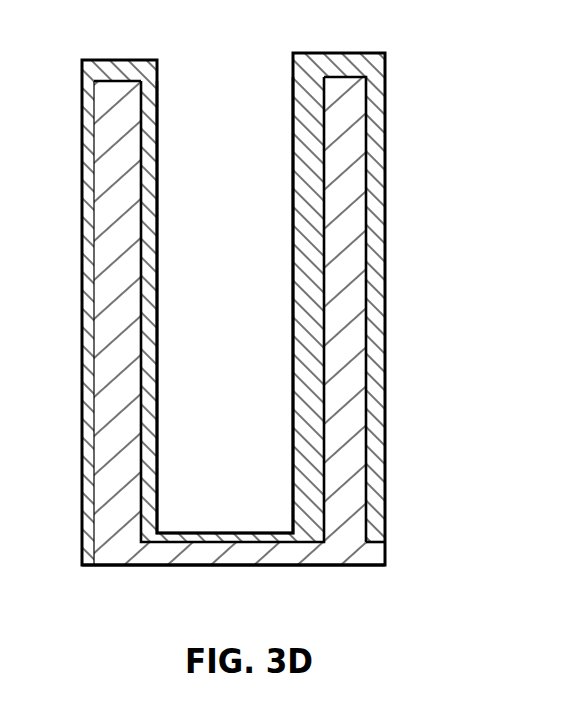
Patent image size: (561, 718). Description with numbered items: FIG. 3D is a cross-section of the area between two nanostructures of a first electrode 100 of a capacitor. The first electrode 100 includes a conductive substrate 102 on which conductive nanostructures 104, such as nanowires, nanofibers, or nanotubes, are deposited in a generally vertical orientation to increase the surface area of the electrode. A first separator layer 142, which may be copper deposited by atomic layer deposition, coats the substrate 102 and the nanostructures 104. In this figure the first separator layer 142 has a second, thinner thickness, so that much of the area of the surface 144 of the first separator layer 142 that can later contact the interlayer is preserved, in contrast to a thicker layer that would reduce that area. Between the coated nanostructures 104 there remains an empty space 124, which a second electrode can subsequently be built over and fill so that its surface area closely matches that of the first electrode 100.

The first electrode 100 is at (358, 575).
The substrate 102 is at (153, 557).
The conductive nanostructures 104 is at (107, 392).
The space 124 is at (255, 88).
The first separator layer 142 is at (143, 80).
The surface 144 is at (157, 275).